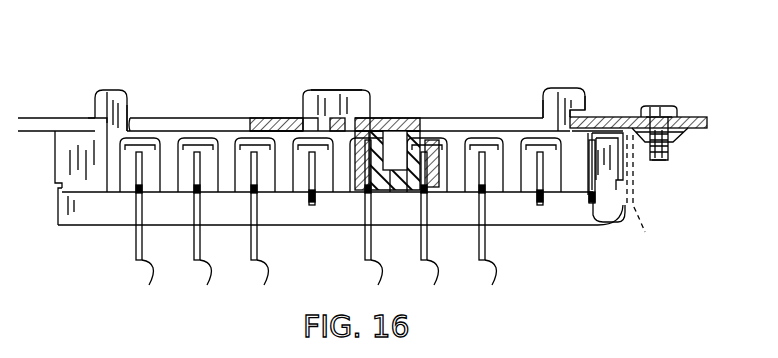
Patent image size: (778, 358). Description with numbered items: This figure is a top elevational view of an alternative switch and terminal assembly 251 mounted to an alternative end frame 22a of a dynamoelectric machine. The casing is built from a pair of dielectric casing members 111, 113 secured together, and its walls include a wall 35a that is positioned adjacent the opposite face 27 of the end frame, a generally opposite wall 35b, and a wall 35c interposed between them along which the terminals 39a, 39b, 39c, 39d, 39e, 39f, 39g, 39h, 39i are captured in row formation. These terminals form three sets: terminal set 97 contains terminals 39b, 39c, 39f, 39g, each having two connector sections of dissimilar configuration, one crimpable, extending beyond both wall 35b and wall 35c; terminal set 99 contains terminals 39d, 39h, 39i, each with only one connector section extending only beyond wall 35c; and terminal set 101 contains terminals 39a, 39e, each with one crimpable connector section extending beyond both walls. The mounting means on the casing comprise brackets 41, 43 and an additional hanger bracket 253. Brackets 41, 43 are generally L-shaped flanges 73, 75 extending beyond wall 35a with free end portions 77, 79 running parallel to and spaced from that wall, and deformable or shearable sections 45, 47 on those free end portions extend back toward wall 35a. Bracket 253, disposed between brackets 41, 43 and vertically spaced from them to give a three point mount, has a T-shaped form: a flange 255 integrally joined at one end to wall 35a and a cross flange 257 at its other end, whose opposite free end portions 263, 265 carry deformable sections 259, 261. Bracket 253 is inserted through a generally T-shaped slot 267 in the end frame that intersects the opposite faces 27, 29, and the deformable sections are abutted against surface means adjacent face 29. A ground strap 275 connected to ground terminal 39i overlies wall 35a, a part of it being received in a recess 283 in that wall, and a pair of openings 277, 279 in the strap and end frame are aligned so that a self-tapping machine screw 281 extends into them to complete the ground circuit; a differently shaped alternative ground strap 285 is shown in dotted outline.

The end frame 22a is at (708, 122).
The opposite face 27 is at (688, 130).
The opposite face 29 is at (684, 118).
The wall 35a is at (172, 128).
The wall 35b is at (98, 228).
The wall 35c is at (60, 215).
The terminal 39a is at (134, 193).
The terminal 39b is at (192, 193).
The terminal 39c is at (249, 193).
The terminal 39d is at (307, 193).
The terminal 39e is at (364, 193).
The terminal 39f is at (420, 193).
The terminal 39g is at (478, 193).
The terminal 39h is at (536, 193).
The ground terminal 39i is at (590, 196).
The mounting bracket 41 is at (96, 116).
The mounting bracket 43 is at (585, 100).
The deformable section 45 is at (93, 117).
The deformable section 47 is at (578, 116).
The L-shaped flange 73 is at (128, 114).
The L-shaped flange 75 is at (543, 102).
The free end portion 77 is at (107, 95).
The free end portion 79 is at (558, 86).
The terminal set 97 is at (339, 224).
The terminal set 99 is at (312, 208).
The terminal set 101 is at (249, 218).
The casing member 111 is at (72, 226).
The casing member 113 is at (62, 147).
The switch and terminal assembly 251 is at (661, 212).
The hanger bracket 253 is at (346, 72).
The flange 255 is at (346, 112).
The cross flange 257 is at (322, 92).
The deformable section 259 is at (378, 117).
The deformable section 261 is at (312, 117).
The free end portion 263 is at (372, 110).
The free end portion 265 is at (318, 117).
The slot 267 is at (304, 124).
The ground strap 275 is at (672, 140).
The opening 277 is at (660, 163).
The opening 279 is at (660, 97).
The self-tapping machine screw 281 is at (670, 110).
The recess 283 is at (604, 135).
The ground strap 285 is at (630, 212).